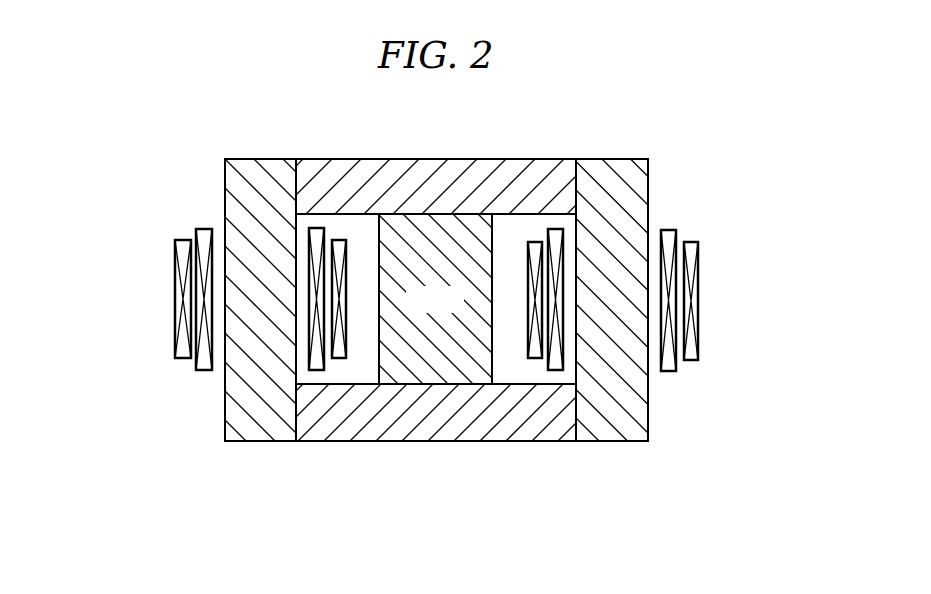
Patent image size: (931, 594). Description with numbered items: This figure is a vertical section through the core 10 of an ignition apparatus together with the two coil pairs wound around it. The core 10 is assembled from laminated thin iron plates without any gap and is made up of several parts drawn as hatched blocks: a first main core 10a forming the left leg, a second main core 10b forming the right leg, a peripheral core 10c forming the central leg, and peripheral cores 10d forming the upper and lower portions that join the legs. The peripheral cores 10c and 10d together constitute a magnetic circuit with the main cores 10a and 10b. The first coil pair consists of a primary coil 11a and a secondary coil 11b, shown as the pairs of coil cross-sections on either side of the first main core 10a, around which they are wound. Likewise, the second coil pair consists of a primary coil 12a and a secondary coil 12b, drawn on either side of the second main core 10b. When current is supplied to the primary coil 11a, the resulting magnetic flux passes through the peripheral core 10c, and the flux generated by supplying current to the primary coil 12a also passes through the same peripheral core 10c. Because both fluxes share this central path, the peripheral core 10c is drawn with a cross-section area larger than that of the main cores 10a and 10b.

The core 10 is at (659, 457).
The first main core 10a is at (277, 158).
The second main core 10b is at (615, 159).
The peripheral core 10c is at (458, 309).
The peripheral core 10d is at (428, 158).
The primary coil 11a is at (203, 229).
The secondary coil 11b is at (181, 240).
The primary coil 12a is at (555, 229).
The secondary coil 12b is at (535, 242).